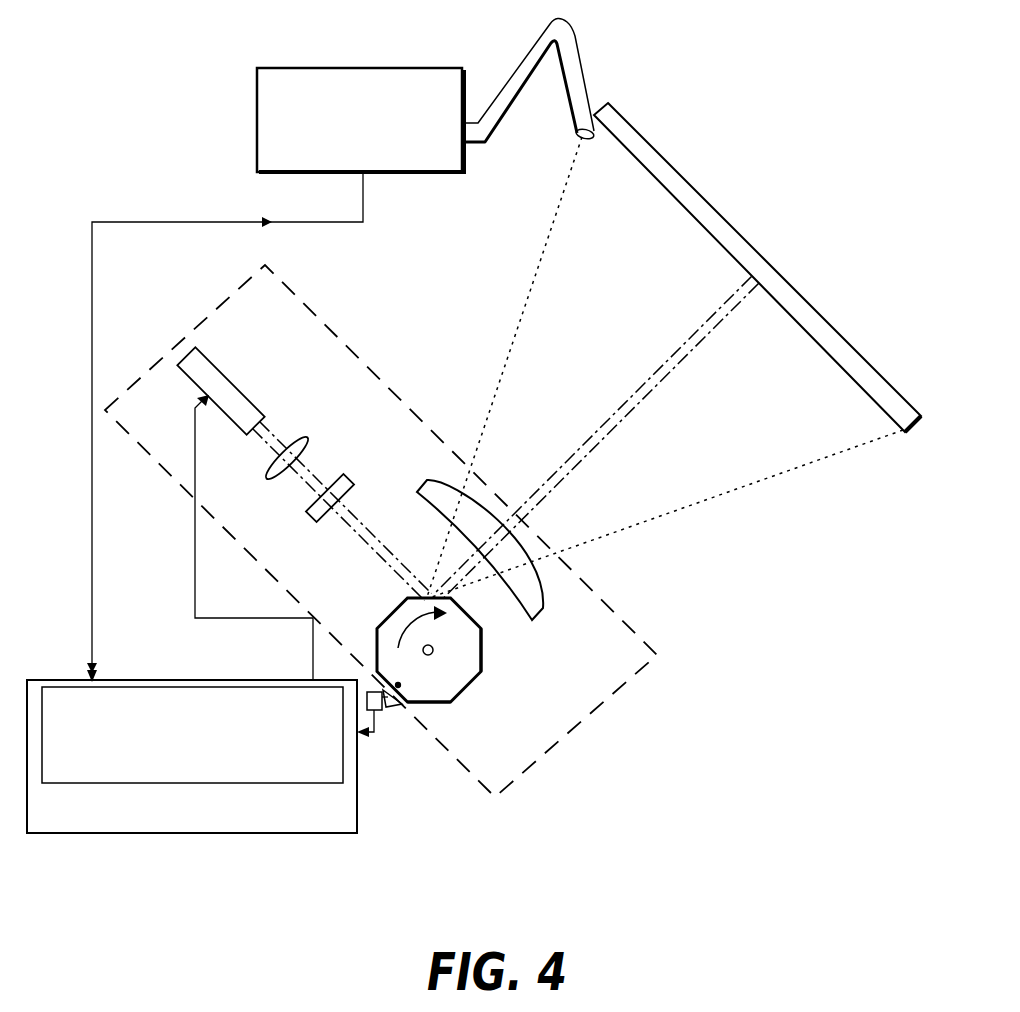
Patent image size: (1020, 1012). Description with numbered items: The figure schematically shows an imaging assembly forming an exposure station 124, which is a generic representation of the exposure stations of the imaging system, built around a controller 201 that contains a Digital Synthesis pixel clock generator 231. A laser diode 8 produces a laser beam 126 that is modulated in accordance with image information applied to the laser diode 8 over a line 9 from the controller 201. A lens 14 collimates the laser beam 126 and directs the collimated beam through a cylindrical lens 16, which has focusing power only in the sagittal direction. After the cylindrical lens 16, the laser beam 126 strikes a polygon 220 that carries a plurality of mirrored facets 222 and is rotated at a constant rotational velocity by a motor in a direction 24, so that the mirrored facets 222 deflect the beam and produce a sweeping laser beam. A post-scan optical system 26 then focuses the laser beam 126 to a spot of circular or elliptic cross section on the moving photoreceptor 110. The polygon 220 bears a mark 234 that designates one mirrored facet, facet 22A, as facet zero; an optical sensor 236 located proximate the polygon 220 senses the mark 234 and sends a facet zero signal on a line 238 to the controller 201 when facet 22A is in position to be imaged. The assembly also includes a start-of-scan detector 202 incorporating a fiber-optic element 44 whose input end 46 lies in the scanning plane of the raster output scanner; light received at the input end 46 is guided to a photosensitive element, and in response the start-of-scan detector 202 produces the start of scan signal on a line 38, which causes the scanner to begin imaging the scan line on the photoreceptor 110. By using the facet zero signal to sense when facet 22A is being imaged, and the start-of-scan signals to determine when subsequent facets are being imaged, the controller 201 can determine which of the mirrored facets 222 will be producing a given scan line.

The start-of-scan detector 202 is at (363, 72).
The fiber-optic element 44 is at (507, 78).
The input end 46 is at (577, 141).
The photoreceptor 110 is at (705, 208).
The laser beam 126 is at (655, 372).
The line 38 is at (93, 330).
The exposure station 124 is at (588, 717).
The laser diode 8 is at (215, 377).
The line 9 is at (196, 484).
The lens 14 is at (305, 441).
The cylindrical lens 16 is at (315, 513).
The post-scan optical system 26 is at (537, 604).
The polygon 220 is at (453, 688).
The mirrored facets 222 is at (482, 648).
The direction 24 is at (421, 612).
The mark 234 is at (398, 685).
The facet 22A is at (397, 702).
The optical sensor 236 is at (381, 712).
The line 238 is at (366, 738).
The controller 201 is at (221, 834).
The Digital Synthesis pixel clock generator 231 is at (182, 686).